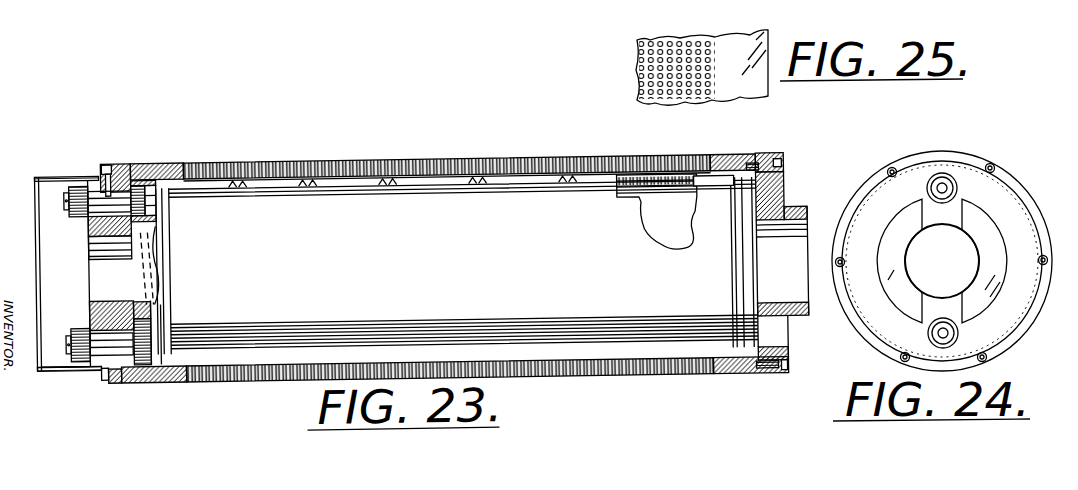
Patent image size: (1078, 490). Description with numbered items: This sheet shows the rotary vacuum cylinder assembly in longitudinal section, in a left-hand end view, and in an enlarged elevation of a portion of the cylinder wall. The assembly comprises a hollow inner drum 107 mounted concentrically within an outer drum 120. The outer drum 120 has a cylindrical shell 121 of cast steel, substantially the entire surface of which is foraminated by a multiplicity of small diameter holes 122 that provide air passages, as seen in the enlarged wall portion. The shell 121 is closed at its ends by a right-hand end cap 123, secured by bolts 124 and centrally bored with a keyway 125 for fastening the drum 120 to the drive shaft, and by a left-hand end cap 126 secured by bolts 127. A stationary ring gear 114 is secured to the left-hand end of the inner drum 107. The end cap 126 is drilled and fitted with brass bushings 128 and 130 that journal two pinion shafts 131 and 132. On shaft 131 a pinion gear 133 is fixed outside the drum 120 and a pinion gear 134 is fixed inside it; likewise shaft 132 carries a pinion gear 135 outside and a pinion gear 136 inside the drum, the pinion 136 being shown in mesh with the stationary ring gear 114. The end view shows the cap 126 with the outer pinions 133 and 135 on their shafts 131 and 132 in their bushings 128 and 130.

In FIG. 23, the inner drum 107 is at (382, 281).
In FIG. 23, the stationary ring gear 114 is at (93, 301).
In FIG. 23, the outer drum 120 is at (148, 378).
In FIG. 25, the outer drum 120 is at (727, 90).
In FIG. 23, the cylindrical shell 121 is at (180, 159).
In FIG. 23, the holes 122 is at (288, 159).
In FIG. 25, the holes 122 is at (635, 85).
In FIG. 23, the right-hand end cap 123 is at (787, 178).
In FIG. 23, the bolts 124 is at (786, 166).
In FIG. 23, the keyway 125 is at (795, 213).
In FIG. 23, the left-hand end cap 126 is at (88, 233).
In FIG. 24, the left-hand end cap 126 is at (920, 153).
In FIG. 23, the bolts 127 is at (107, 366).
In FIG. 24, the bolts 127 is at (872, 356).
In FIG. 23, the brass bushing 128 is at (90, 216).
In FIG. 24, the brass bushing 128 is at (952, 172).
In FIG. 23, the brass bushing 130 is at (92, 319).
In FIG. 24, the brass bushing 130 is at (860, 338).
In FIG. 23, the pinion shaft 131 is at (110, 194).
In FIG. 24, the pinion shaft 131 is at (942, 261).
In FIG. 23, the pinion shaft 132 is at (112, 380).
In FIG. 24, the pinion shaft 132 is at (944, 270).
In FIG. 23, the pinion gear 133 is at (72, 173).
In FIG. 24, the pinion gear 133 is at (943, 173).
In FIG. 23, the pinion gear 134 is at (138, 182).
In FIG. 23, the pinion gear 135 is at (80, 363).
In FIG. 24, the pinion gear 135 is at (958, 334).
In FIG. 23, the pinion gear 136 is at (178, 378).